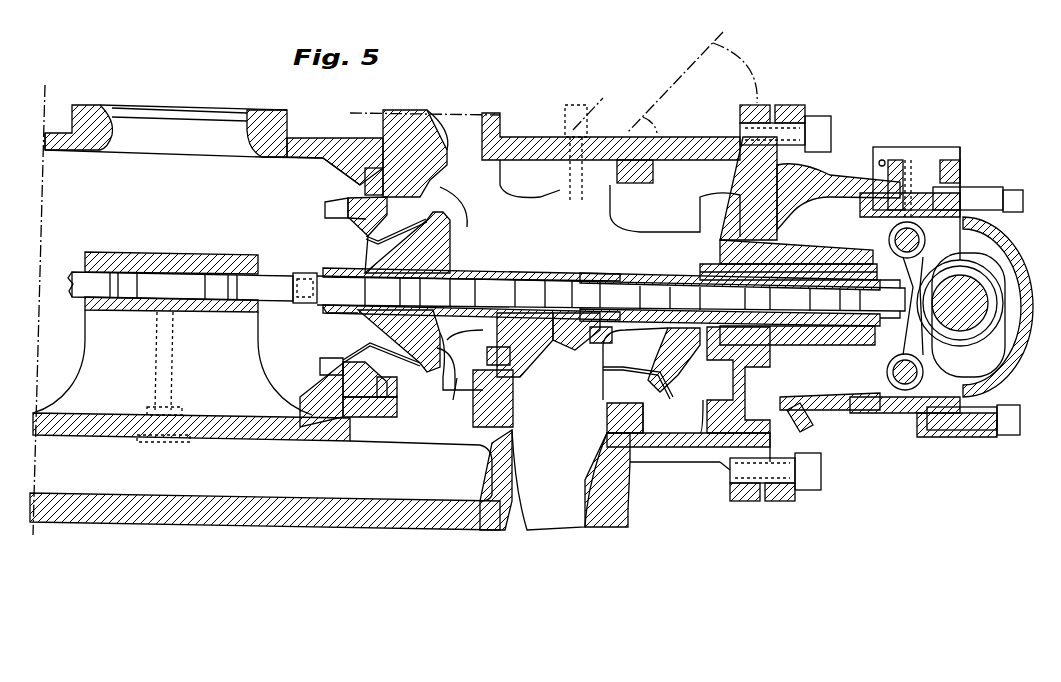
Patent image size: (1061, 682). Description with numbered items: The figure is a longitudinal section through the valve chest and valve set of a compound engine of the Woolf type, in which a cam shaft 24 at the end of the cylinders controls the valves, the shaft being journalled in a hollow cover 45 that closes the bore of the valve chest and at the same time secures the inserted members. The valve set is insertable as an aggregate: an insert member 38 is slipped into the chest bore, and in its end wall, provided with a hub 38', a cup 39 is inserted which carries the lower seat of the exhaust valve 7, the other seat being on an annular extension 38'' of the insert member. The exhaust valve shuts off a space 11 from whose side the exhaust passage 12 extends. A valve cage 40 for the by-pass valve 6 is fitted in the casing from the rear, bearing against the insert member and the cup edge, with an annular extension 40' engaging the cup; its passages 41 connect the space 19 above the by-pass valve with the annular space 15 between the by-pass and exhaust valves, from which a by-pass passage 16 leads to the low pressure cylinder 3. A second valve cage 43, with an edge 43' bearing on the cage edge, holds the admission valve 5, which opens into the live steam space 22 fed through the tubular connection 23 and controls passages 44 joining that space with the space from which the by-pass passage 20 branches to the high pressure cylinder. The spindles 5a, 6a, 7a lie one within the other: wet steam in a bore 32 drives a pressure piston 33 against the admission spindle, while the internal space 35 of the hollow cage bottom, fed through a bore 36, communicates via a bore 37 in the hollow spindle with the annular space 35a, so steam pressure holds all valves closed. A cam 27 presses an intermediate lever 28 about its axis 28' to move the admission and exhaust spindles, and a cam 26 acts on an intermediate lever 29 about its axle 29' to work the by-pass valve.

The low pressure cylinder 3 is at (207, 503).
The admission valve 5 is at (360, 238).
The admission valve spindle 5a is at (430, 305).
The by-pass valve 6 is at (505, 350).
The hollow spindle of by-pass valve 6a is at (838, 262).
The exhaust valve 7 is at (655, 375).
The hollow spindle of exhaust valve 7a is at (802, 262).
The space 11 is at (720, 188).
The exhaust passage 12 is at (690, 80).
The annular space 15 is at (540, 192).
The by-pass passage 16 is at (550, 505).
The space above by-pass valve 19 is at (453, 400).
The by-pass passage 20 is at (455, 125).
The live steam space 22 is at (303, 178).
The tubular connection 23 is at (88, 118).
The cam shaft 24 is at (980, 300).
The cam 26 is at (975, 275).
The cam 27 is at (990, 355).
The intermediate lever 28 is at (879, 360).
The axis 28' is at (924, 375).
The intermediate lever 29 is at (933, 292).
The axle 29' is at (891, 238).
The bore 32 is at (176, 286).
The pressure piston 33 is at (259, 290).
The internal space of hollow body 35 is at (537, 370).
The annular space 35a is at (552, 283).
The bore 36 is at (584, 130).
The bore 37 is at (560, 360).
The insert member 38 is at (738, 380).
The hub 38' is at (730, 329).
The annular extension 38'' is at (628, 143).
The cup 39 is at (710, 372).
The valve cage 40 is at (483, 259).
The annular extension 40' is at (645, 363).
The passages 41 is at (490, 395).
The second valve cage 43 is at (372, 339).
The edge 43' is at (360, 153).
The passages 44 is at (385, 392).
The hollow cover 45 is at (850, 408).